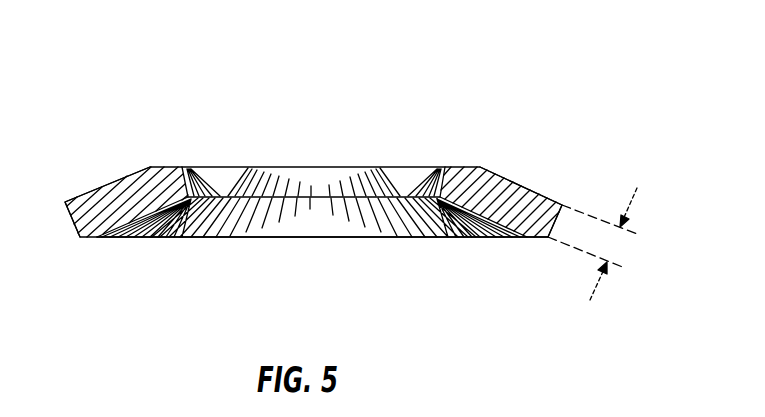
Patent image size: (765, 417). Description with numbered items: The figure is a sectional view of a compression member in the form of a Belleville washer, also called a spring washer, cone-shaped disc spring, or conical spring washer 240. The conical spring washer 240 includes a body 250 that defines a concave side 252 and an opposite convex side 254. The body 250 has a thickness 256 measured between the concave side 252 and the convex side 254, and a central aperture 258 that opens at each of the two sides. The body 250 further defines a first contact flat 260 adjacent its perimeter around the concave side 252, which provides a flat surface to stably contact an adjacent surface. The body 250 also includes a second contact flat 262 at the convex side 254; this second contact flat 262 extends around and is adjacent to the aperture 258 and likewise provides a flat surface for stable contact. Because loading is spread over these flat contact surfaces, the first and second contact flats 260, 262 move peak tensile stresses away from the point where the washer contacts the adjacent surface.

The conical spring washer 240 is at (582, 64).
The body 250 is at (525, 195).
The concave side 252 is at (275, 228).
The convex side 254 is at (500, 173).
The thickness 256 is at (623, 250).
The central aperture 258 is at (290, 172).
The first contact flat 260 is at (88, 238).
The second contact flat 262 is at (165, 167).